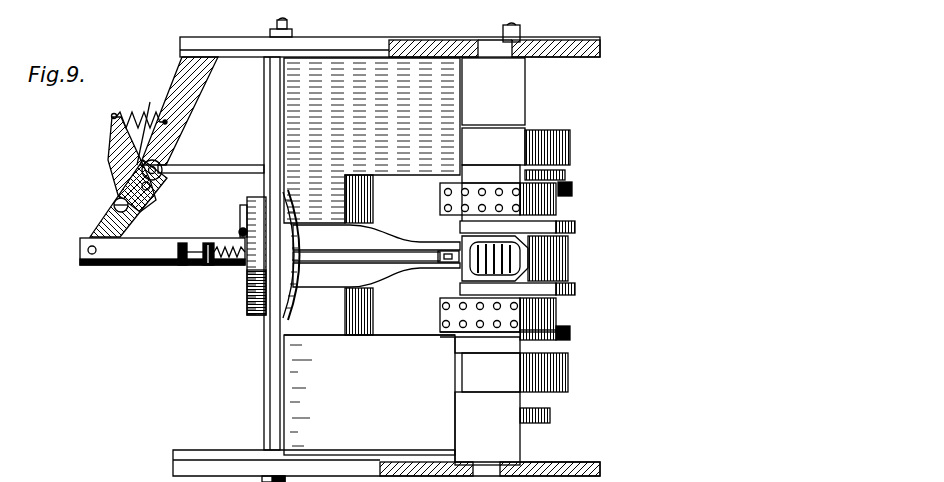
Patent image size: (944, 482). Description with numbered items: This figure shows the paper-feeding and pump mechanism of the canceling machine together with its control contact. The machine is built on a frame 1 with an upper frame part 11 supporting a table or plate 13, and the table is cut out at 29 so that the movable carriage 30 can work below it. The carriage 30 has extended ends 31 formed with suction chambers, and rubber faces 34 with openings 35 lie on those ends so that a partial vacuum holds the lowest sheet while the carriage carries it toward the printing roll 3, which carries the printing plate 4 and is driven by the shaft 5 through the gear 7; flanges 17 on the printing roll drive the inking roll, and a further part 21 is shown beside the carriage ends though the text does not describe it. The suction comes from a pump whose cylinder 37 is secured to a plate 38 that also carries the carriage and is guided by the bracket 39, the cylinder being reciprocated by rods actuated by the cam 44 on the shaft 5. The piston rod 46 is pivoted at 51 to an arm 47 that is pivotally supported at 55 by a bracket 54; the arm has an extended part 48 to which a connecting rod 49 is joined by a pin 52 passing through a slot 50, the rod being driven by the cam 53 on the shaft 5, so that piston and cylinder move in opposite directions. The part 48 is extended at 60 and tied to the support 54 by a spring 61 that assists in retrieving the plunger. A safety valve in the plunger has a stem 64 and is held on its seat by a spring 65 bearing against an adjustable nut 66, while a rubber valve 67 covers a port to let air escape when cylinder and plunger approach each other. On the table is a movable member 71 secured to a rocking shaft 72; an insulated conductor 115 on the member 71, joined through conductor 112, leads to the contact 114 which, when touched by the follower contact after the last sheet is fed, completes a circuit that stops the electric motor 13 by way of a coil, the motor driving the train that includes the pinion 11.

The frame 1 is at (593, 462).
The pinion 11 is at (592, 57).
The electric motor 13 is at (357, 85).
The printing roll 3 is at (566, 281).
The printing plate 4 is at (510, 262).
The shaft 5 is at (522, 33).
The gear 7 is at (550, 415).
The flanges 17 is at (576, 232).
The coil end 21 is at (569, 134).
The cut out 29 is at (390, 182).
The movable carriage 30 is at (416, 322).
The extended ends 31 is at (504, 178).
The rubber faces 34 is at (440, 194).
The openings 35 is at (520, 210).
The pump cylinder 37 is at (253, 315).
The plate 38 is at (518, 120).
The bracket 39 is at (250, 57).
The eccentric or cam 44 is at (572, 194).
The piston rod 46 is at (170, 248).
The arm 47 is at (106, 226).
The extended part 48 is at (155, 180).
The connecting rod 49 is at (241, 165).
The slot 50 is at (143, 193).
The pivot 51 is at (88, 265).
The pin 52 is at (163, 166).
The eccentric or cam 53 is at (566, 176).
The bracket 54 is at (200, 92).
The pivot 55 is at (114, 203).
The extension 60 is at (116, 150).
The spring 61 is at (140, 123).
The stem 64 is at (178, 258).
The spring 65 is at (232, 266).
The adjustable nut 66 is at (206, 265).
The valve 67 is at (247, 208).
The movable member 71 is at (378, 245).
The shaft 72 is at (289, 29).
The conductor 112 is at (318, 325).
The contact 114 is at (446, 252).
The conductor 115 is at (410, 266).